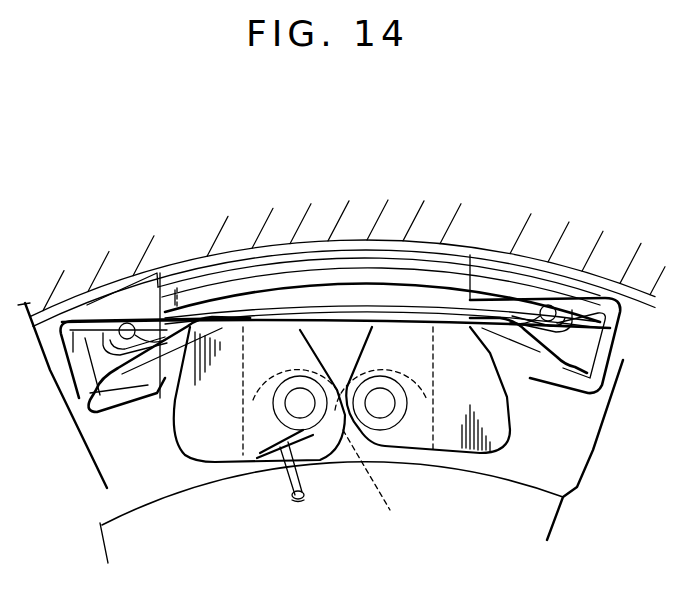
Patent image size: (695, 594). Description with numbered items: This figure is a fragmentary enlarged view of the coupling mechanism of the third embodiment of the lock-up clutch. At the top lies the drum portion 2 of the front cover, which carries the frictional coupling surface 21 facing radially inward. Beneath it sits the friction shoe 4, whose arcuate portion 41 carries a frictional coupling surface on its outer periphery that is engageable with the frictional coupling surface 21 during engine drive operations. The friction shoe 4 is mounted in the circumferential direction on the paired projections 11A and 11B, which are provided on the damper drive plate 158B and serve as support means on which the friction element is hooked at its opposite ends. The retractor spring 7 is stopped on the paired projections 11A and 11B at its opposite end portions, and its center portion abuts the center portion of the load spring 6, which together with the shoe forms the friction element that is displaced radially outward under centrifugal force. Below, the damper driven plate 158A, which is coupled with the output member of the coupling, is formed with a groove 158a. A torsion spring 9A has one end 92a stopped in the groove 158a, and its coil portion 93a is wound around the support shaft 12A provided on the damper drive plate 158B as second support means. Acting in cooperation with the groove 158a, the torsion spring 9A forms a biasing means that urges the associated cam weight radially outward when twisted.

The drum portion 2 is at (334, 228).
The friction shoe 4 is at (603, 303).
The load spring 6 is at (580, 361).
The retractor spring 7 is at (452, 305).
The torsion spring 9A is at (283, 463).
The projection 11A is at (127, 322).
The projection 11B is at (548, 305).
The support shaft 12A is at (303, 410).
The frictional coupling surface 21 is at (172, 272).
The arcuate portion 41 is at (473, 263).
The end of torsion spring 92a is at (293, 500).
The coil portion 93a is at (380, 481).
The groove 158a is at (307, 497).
The damper driven plate 158A is at (100, 543).
The damper drive plate 158B is at (577, 450).